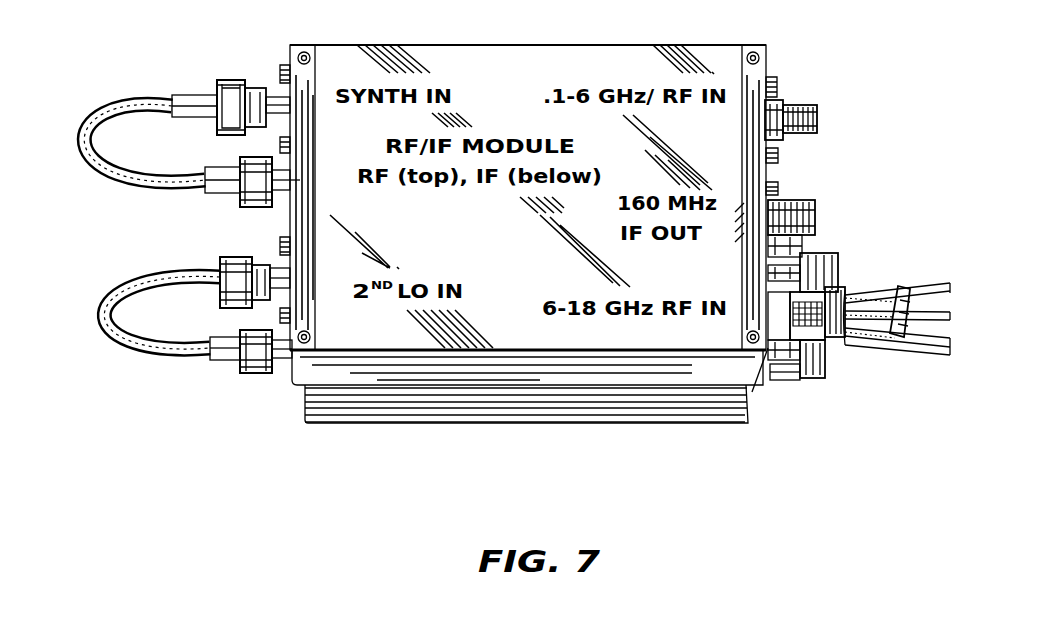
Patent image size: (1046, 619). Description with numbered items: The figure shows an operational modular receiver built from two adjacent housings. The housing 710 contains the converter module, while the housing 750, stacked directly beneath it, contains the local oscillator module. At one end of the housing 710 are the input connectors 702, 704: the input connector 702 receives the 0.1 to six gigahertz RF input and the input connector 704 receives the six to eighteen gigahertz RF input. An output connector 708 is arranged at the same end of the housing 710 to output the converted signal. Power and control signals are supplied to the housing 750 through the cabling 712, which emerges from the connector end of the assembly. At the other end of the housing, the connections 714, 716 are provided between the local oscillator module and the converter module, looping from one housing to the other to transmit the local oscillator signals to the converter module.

The input connector 702 is at (812, 107).
The input connector 704 is at (823, 300).
The output connector 708 is at (812, 205).
The housing 710 is at (290, 381).
The cabling 712 is at (880, 353).
The connection 714 is at (117, 115).
The connection 716 is at (150, 275).
The housing 750 is at (345, 412).